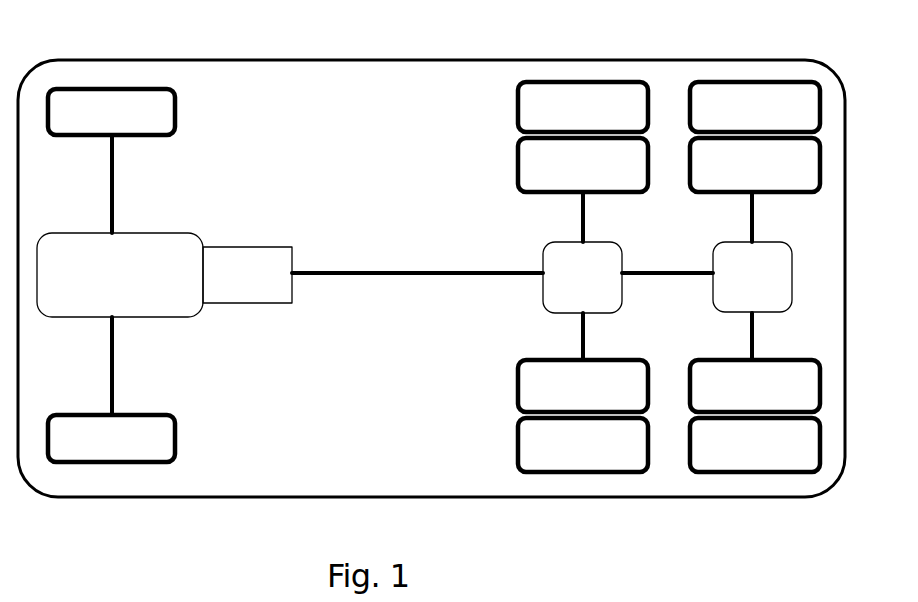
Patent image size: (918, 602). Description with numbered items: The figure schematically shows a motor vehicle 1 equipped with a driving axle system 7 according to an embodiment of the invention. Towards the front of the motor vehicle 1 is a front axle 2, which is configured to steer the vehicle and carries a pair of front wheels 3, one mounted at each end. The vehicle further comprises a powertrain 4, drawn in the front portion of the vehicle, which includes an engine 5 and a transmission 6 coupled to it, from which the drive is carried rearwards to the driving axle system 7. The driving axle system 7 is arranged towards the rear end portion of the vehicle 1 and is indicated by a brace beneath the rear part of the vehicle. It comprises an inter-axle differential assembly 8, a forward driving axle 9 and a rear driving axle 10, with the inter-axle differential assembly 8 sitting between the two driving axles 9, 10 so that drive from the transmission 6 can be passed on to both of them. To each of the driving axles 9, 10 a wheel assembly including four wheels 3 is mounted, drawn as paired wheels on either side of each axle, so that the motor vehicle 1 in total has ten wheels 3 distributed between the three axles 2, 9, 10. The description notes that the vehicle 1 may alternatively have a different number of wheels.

The motor vehicle 1 is at (200, 50).
The front axle 2 is at (116, 378).
The wheels 3 is at (96, 100).
The powertrain 4 is at (290, 258).
The engine 5 is at (150, 250).
The transmission 6 is at (268, 292).
The driving axle system 7 is at (656, 379).
The inter-axle differential assembly 8 is at (550, 290).
The forward driving axle 9 is at (583, 218).
The rear driving axle 10 is at (752, 218).